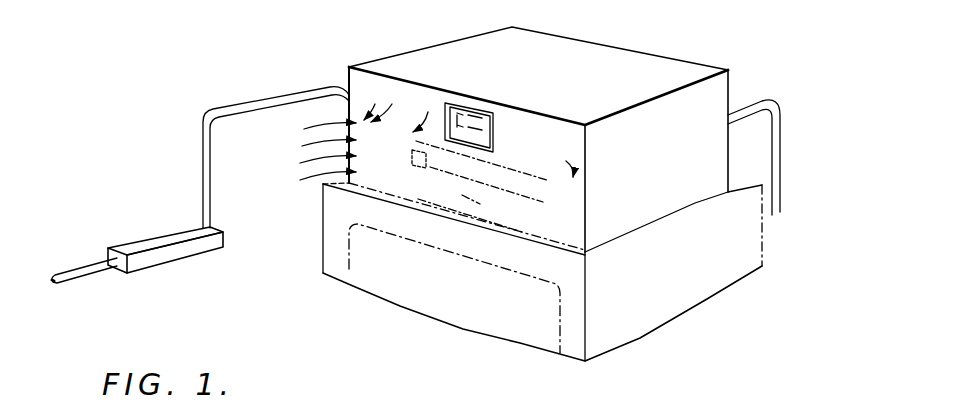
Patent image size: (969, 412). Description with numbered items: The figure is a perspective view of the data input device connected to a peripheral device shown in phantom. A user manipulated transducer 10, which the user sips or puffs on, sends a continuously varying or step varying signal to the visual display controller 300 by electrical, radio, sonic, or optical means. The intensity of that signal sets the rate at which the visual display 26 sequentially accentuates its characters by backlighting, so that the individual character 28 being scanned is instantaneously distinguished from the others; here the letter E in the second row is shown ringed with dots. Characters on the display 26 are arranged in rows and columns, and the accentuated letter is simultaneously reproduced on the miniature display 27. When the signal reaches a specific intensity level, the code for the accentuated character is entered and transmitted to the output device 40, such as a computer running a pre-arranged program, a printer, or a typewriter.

The user manipulated transducer 10 is at (120, 226).
The visual display 26 is at (362, 89).
The miniature display 27 is at (493, 134).
The individual character 28 is at (418, 164).
The visual display controller 300 is at (621, 50).
The output device 40 is at (513, 318).